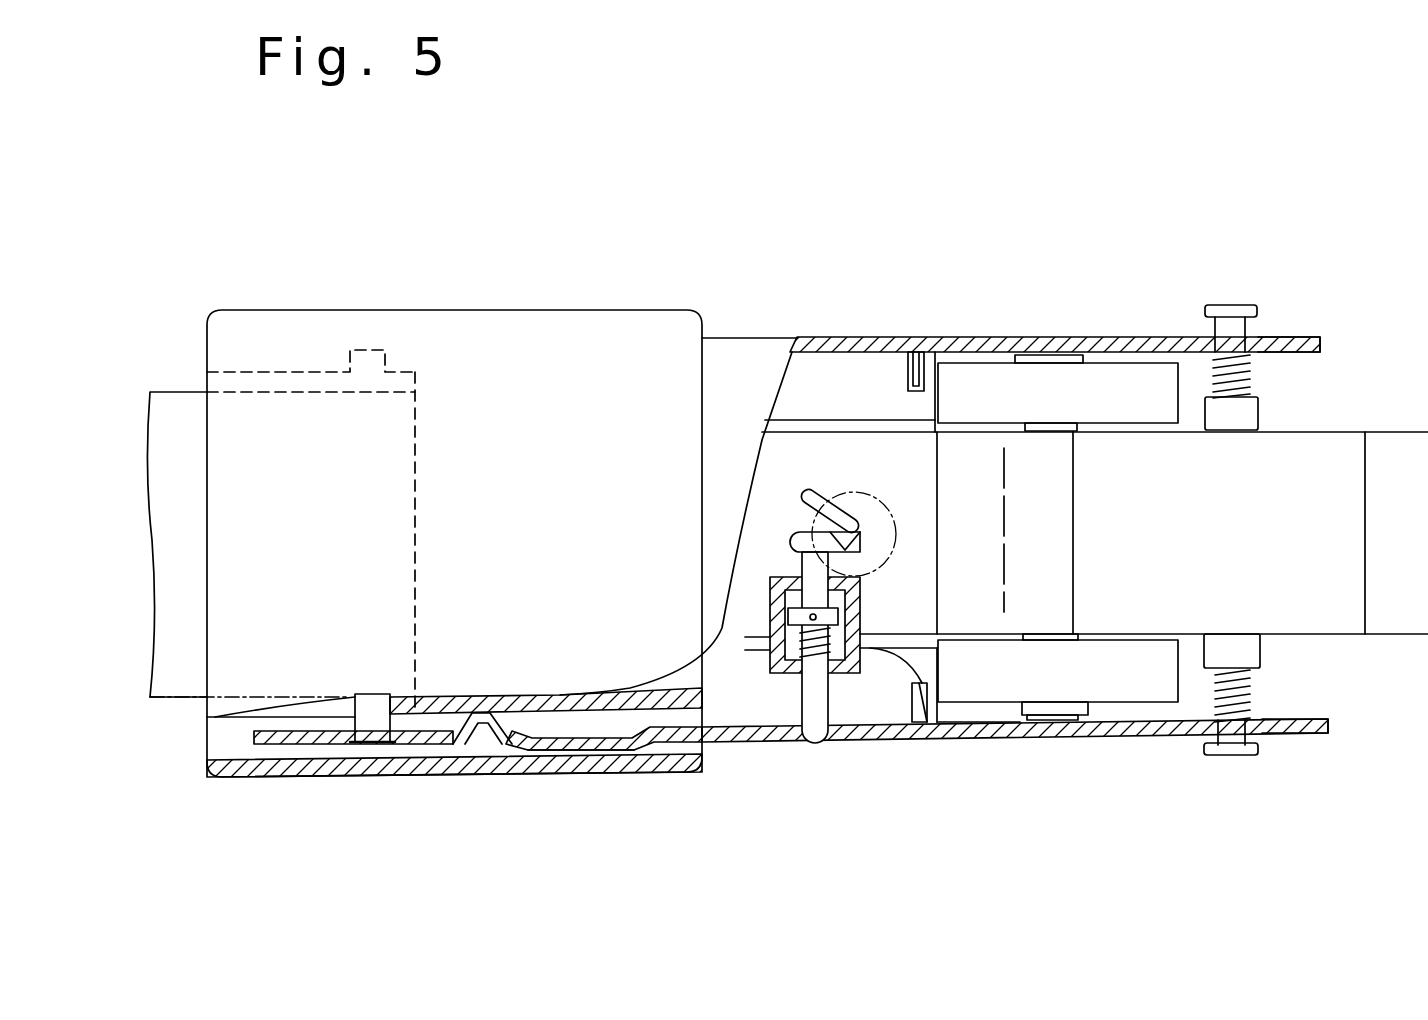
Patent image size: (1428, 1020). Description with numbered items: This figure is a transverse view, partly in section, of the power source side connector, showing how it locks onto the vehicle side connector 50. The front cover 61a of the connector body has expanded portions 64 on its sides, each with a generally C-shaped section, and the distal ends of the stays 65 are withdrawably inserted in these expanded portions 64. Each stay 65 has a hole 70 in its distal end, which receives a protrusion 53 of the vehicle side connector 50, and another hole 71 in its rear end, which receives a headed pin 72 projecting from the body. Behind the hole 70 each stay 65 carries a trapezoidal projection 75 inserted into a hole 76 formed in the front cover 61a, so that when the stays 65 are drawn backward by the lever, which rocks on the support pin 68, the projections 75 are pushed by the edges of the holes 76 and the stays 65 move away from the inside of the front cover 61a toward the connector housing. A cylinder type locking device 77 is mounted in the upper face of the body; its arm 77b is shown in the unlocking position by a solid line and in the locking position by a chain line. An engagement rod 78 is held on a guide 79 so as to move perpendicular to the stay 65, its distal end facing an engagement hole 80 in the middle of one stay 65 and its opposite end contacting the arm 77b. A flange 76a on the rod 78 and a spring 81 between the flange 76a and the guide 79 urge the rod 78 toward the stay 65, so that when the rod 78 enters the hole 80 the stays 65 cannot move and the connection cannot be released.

The vehicle side connector 50 is at (182, 692).
The protrusions 53 is at (372, 745).
The front cover 61a is at (513, 392).
The expanded portions 64 is at (232, 778).
The stays 65 is at (1000, 337).
The support pin 68 is at (1068, 355).
The hole 70 is at (458, 745).
The hole 71 is at (1296, 337).
The headed pins 72 is at (1241, 305).
The trapezoidal projection 75 is at (584, 750).
The holes 76 is at (598, 762).
The flange 76a is at (860, 591).
The locking device 77 is at (885, 500).
The arm 77b is at (805, 530).
The engagement rod 78 is at (838, 697).
The guide 79 is at (748, 742).
The engagement hole 80 is at (780, 675).
The spring 81 is at (937, 737).